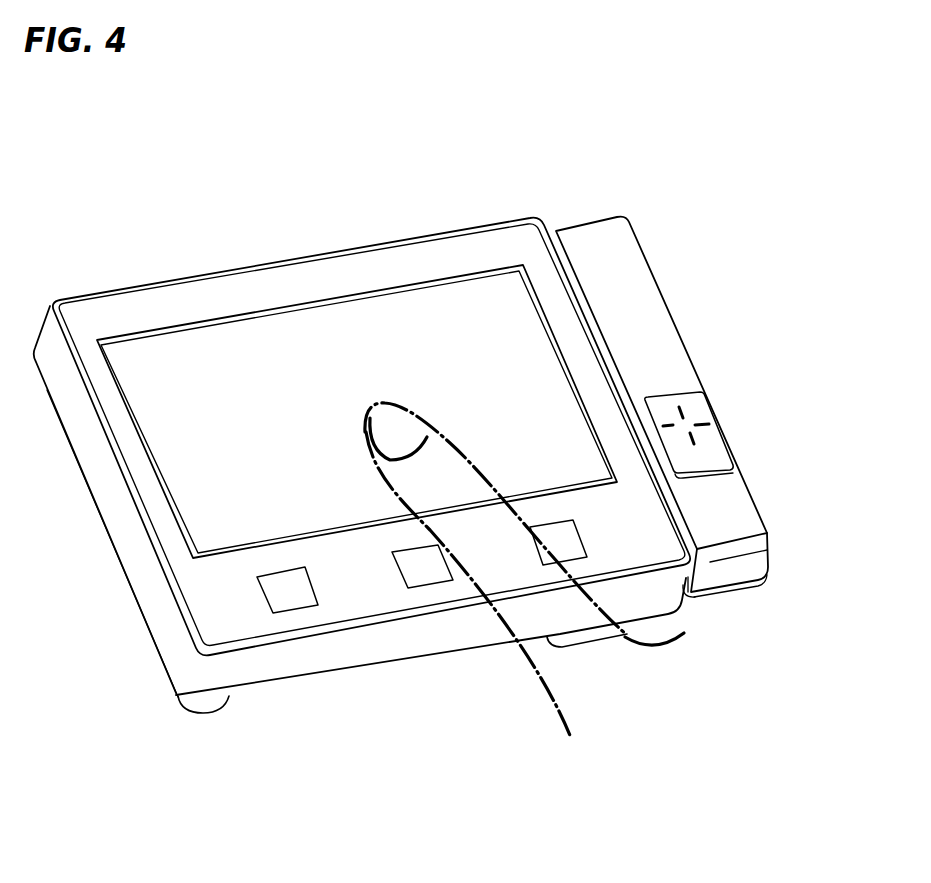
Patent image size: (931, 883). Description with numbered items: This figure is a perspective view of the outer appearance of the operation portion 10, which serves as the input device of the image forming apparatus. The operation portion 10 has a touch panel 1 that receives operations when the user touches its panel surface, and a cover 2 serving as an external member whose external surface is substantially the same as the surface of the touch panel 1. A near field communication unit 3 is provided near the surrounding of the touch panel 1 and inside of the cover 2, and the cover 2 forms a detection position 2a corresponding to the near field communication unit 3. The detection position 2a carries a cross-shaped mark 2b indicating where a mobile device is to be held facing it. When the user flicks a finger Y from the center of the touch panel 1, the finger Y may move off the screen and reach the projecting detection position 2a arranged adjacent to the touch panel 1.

The operation portion 10 is at (197, 302).
The touch panel 1 is at (385, 330).
The cover 2 is at (676, 407).
The detection position 2a is at (721, 419).
The near field communication unit 3 is at (692, 420).
The mark 2b is at (664, 424).
The finger Y is at (457, 476).